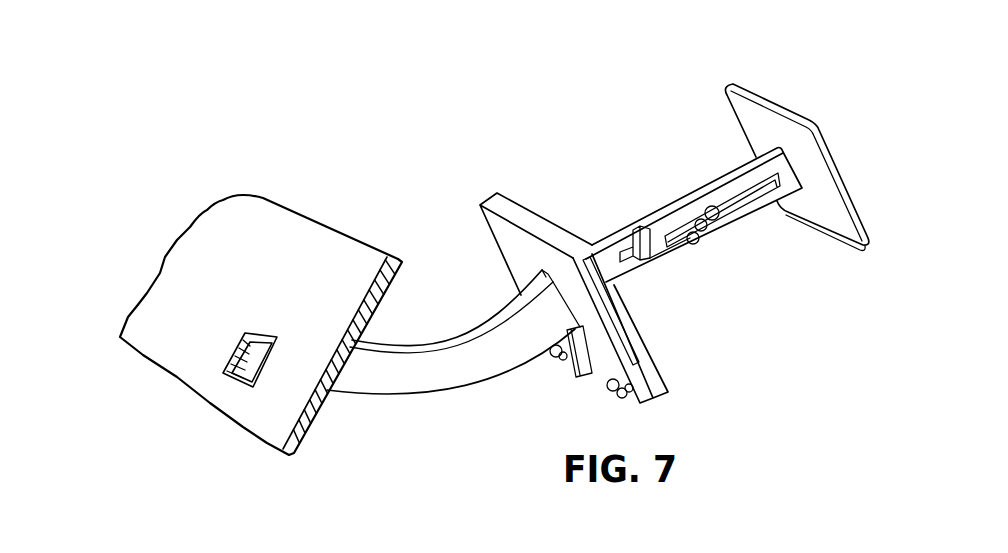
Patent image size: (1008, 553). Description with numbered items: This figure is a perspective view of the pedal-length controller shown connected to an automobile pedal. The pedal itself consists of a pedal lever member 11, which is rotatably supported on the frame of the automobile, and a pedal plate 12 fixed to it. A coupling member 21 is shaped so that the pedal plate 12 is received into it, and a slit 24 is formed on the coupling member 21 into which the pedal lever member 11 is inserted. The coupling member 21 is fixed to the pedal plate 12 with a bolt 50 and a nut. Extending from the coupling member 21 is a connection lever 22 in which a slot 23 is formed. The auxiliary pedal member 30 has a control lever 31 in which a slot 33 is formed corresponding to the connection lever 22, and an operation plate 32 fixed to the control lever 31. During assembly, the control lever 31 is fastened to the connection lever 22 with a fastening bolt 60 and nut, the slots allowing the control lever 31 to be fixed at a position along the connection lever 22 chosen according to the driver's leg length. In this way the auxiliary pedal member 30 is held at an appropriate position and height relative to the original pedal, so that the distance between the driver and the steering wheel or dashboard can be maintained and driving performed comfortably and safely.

The pedal lever member 11 is at (411, 393).
The pedal plate 12 is at (630, 333).
The coupling member 21 is at (480, 192).
The connection lever 22 is at (630, 219).
The slot 23 is at (641, 264).
The slit 24 is at (540, 284).
The auxiliary pedal member 30 is at (816, 138).
The control lever 31 is at (658, 262).
The operation plate 32 is at (847, 183).
The slot 33 is at (753, 195).
The bolt 50 is at (613, 397).
The bolt 60 is at (710, 230).